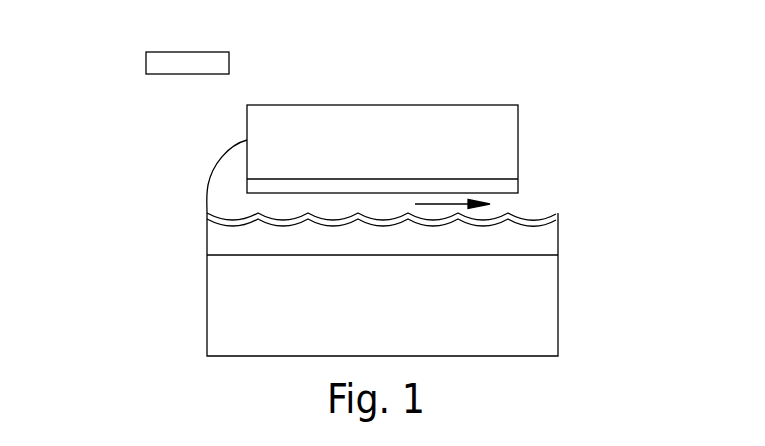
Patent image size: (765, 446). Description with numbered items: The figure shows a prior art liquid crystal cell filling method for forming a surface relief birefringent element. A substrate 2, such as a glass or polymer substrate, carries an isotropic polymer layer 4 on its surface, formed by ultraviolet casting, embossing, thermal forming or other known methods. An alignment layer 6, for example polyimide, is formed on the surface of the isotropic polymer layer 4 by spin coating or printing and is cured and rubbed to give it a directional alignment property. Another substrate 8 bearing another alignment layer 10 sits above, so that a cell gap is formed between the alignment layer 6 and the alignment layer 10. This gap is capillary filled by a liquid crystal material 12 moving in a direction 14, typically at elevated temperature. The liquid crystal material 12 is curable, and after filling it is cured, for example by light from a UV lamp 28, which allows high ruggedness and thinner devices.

The substrate 2 is at (558, 303).
The isotropic polymer layer 4 is at (548, 243).
The alignment layer 6 is at (538, 223).
The another substrate 8 is at (518, 140).
The another alignment layer 10 is at (522, 181).
The liquid crystal material 12 is at (229, 184).
The direction 14 is at (433, 220).
The UV lamp 28 is at (146, 62).